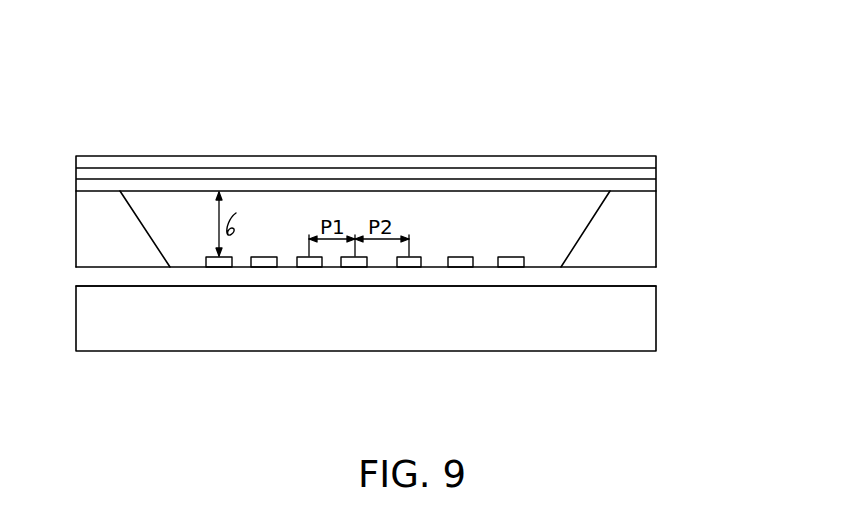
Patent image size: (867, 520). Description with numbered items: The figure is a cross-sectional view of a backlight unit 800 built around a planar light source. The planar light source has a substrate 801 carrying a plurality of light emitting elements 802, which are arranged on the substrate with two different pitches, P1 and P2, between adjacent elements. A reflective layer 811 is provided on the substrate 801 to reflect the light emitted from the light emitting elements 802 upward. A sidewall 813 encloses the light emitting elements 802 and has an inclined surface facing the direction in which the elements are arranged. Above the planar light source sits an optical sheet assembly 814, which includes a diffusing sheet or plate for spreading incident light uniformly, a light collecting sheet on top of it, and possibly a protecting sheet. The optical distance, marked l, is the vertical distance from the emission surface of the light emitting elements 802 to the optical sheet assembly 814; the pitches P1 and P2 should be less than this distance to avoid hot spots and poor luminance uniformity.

The backlight unit 800 is at (542, 132).
The substrate 801 is at (652, 333).
The light emitting elements 802 is at (510, 257).
The reflective layer 811 is at (652, 277).
The sidewall 813 is at (652, 213).
The optical sheet assembly 814 is at (663, 156).